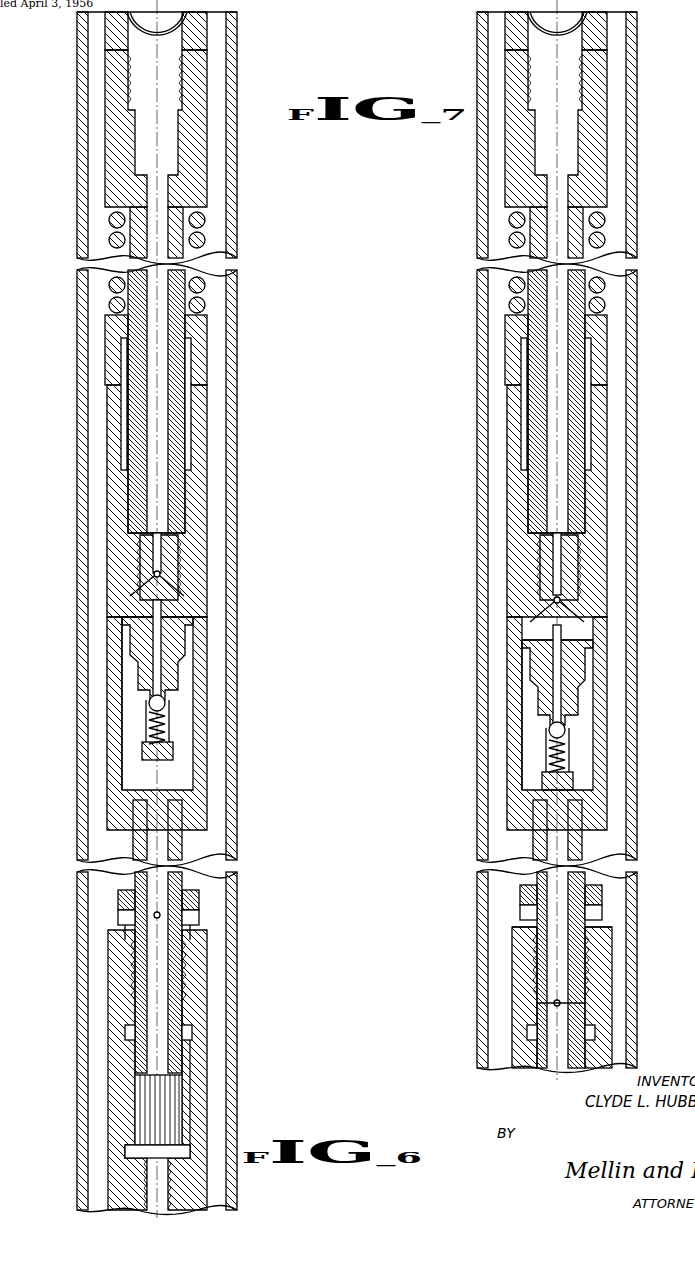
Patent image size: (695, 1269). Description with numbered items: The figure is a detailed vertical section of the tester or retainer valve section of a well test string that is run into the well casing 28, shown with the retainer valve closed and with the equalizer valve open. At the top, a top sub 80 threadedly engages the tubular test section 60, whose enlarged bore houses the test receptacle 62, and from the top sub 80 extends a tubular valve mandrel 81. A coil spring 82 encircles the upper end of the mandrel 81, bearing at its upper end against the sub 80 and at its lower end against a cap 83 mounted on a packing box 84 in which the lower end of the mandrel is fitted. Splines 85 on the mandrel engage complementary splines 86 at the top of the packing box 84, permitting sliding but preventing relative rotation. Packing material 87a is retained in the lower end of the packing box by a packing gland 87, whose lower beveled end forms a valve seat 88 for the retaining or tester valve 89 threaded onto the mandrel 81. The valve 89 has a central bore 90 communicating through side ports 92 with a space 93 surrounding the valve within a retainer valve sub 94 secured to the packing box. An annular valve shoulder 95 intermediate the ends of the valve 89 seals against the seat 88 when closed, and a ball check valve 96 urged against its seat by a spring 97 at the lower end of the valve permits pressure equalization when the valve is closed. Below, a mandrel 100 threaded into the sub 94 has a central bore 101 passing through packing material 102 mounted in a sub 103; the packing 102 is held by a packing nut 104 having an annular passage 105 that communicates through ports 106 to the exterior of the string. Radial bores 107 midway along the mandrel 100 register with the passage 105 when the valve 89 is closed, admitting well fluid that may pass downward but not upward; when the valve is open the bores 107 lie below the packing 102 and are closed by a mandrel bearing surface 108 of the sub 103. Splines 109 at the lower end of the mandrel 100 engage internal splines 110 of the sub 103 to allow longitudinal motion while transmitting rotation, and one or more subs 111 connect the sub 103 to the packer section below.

In FIG. 6, the well casing 28 is at (238, 22).
In FIG. 7, the well casing 28 is at (637, 25).
In FIG. 6, the tubular test section 60 is at (210, 42).
In FIG. 7, the tubular test section 60 is at (510, 38).
In FIG. 6, the test receptacle 62 is at (132, 26).
In FIG. 7, the test receptacle 62 is at (535, 15).
In FIG. 6, the top sub 80 is at (207, 156).
In FIG. 7, the top sub 80 is at (607, 110).
In FIG. 6, the tubular valve mandrel 81 is at (183, 218).
In FIG. 7, the tubular valve mandrel 81 is at (580, 202).
In FIG. 6, the coil spring 82 is at (205, 286).
In FIG. 7, the coil spring 82 is at (605, 238).
In FIG. 6, the cap 83 is at (207, 330).
In FIG. 7, the cap 83 is at (607, 330).
In FIG. 6, the packing box 84 is at (205, 415).
In FIG. 7, the packing box 84 is at (605, 410).
In FIG. 6, the splines 85 is at (189, 366).
In FIG. 7, the splines 85 is at (592, 430).
In FIG. 6, the complementary splines 86 is at (186, 400).
In FIG. 7, the complementary splines 86 is at (592, 456).
In FIG. 6, the packing gland 87 is at (182, 562).
In FIG. 7, the packing gland 87 is at (590, 565).
In FIG. 6, the packing material 87a is at (186, 500).
In FIG. 7, the packing material 87a is at (588, 500).
In FIG. 6, the valve seat 88 is at (195, 612).
In FIG. 7, the valve seat 88 is at (592, 612).
In FIG. 6, the retaining or tester valve 89 is at (188, 636).
In FIG. 7, the retaining or tester valve 89 is at (590, 650).
In FIG. 6, the central bore 90 is at (162, 657).
In FIG. 7, the central bore 90 is at (562, 680).
In FIG. 6, the side ports 92 is at (164, 576).
In FIG. 7, the side ports 92 is at (585, 620).
In FIG. 6, the space 93 is at (188, 693).
In FIG. 7, the space 93 is at (530, 695).
In FIG. 6, the retainer valve sub 94 is at (207, 722).
In FIG. 7, the retainer valve sub 94 is at (512, 722).
In FIG. 6, the annular valve shoulder 95 is at (120, 613).
In FIG. 7, the annular valve shoulder 95 is at (530, 645).
In FIG. 6, the ball check valve 96 is at (149, 702).
In FIG. 7, the ball check valve 96 is at (550, 735).
In FIG. 6, the spring 97 is at (152, 738).
In FIG. 7, the spring 97 is at (552, 762).
In FIG. 6, the mandrel 100 is at (180, 846).
In FIG. 7, the mandrel 100 is at (578, 846).
In FIG. 6, the central bore 101 is at (170, 882).
In FIG. 7, the central bore 101 is at (568, 878).
In FIG. 6, the packing material 102 is at (188, 976).
In FIG. 7, the packing material 102 is at (590, 970).
In FIG. 6, the sub 103 is at (198, 1018).
In FIG. 7, the sub 103 is at (600, 985).
In FIG. 6, the packing nut 104 is at (122, 896).
In FIG. 7, the packing nut 104 is at (600, 940).
In FIG. 6, the annular passage 105 is at (125, 916).
In FIG. 7, the annular passage 105 is at (598, 915).
In FIG. 6, the ports 106 is at (125, 906).
In FIG. 7, the ports 106 is at (598, 900).
In FIG. 6, the radial bores 107 is at (128, 935).
In FIG. 7, the radial bores 107 is at (540, 1003).
In FIG. 6, the mandrel bearing surface 108 is at (130, 1012).
In FIG. 7, the mandrel bearing surface 108 is at (590, 1015).
In FIG. 6, the splines 109 is at (186, 1054).
In FIG. 6, the internal splines 110 is at (175, 1108).
In FIG. 6, the subs 111 is at (128, 1190).